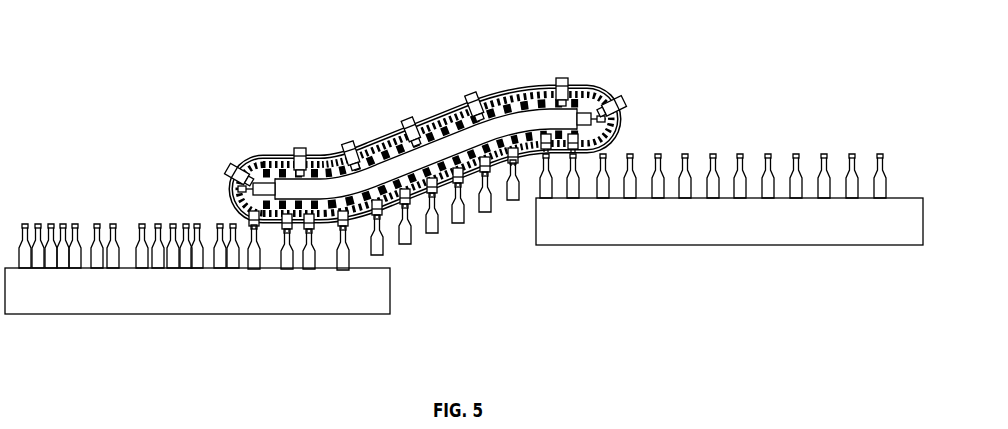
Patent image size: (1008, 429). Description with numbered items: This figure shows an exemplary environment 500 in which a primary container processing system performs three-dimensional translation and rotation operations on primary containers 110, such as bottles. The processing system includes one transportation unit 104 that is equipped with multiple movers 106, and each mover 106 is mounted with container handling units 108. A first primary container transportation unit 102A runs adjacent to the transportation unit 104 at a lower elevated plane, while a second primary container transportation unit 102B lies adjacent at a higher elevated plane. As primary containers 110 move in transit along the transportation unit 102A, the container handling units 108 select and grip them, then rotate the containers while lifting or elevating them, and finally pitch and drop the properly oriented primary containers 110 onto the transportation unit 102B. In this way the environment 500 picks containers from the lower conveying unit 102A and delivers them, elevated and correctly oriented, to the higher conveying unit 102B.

The processing system environment 500 is at (72, 45).
The primary container transportation unit 102A is at (133, 298).
The primary container transportation unit 102B is at (722, 236).
The transportation unit 104 is at (454, 141).
The mover 106 is at (381, 142).
The container handling unit 108 is at (623, 104).
The primary container 110 is at (771, 153).